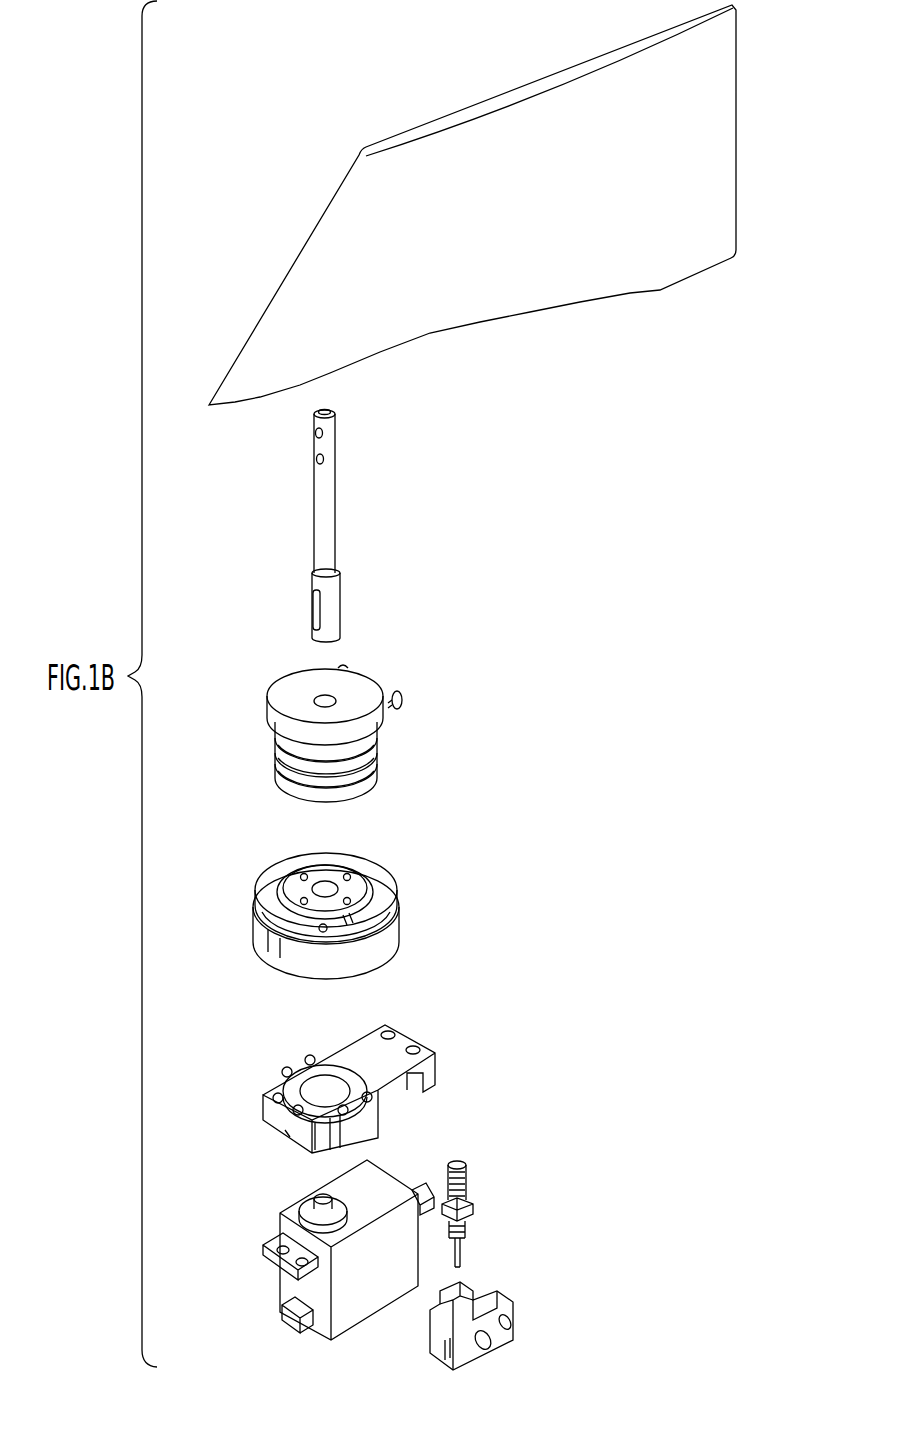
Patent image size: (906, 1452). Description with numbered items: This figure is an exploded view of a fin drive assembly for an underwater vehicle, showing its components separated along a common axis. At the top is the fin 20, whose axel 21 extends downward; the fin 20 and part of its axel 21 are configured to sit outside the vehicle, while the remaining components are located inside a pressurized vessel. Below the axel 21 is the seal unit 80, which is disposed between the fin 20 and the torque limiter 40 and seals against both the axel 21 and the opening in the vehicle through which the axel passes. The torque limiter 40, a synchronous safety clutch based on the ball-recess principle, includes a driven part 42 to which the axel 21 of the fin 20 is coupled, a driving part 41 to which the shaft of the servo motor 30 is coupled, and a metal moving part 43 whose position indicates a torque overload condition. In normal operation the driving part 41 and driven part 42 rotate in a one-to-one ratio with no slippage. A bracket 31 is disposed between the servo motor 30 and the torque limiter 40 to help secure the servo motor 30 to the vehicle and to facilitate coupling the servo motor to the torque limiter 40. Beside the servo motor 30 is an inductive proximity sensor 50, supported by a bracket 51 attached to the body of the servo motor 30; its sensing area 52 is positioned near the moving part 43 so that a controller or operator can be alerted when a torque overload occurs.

The fin 20 is at (718, 147).
The axel 21 is at (330, 537).
The seal unit 80 is at (373, 733).
The torque limiter 40 is at (359, 907).
The driving part 41 is at (372, 962).
The driven part 42 is at (345, 867).
The moving part 43 is at (389, 935).
The bracket 31 is at (402, 1046).
The servo motor 30 is at (350, 1305).
The proximity sensor 50 is at (495, 1245).
The bracket 51 is at (513, 1313).
The sensing area 52 is at (458, 1163).